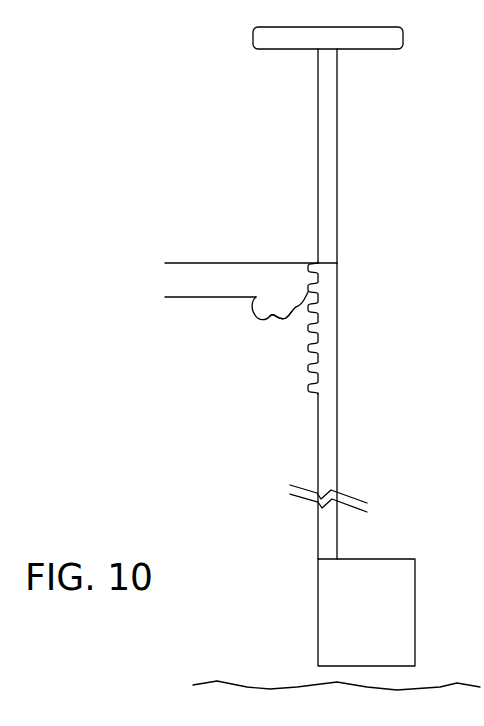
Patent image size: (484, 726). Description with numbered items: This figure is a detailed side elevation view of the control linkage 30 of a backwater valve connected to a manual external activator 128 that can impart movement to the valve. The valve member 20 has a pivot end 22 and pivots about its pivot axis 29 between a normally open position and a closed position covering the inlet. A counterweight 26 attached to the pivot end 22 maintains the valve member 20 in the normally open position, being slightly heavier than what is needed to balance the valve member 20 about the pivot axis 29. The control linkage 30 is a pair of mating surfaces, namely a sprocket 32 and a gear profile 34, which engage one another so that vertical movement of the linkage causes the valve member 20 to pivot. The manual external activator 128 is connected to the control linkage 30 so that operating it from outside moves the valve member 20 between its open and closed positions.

The manual external activator 128 is at (318, 50).
The pivot end 22 is at (299, 266).
The control linkage 30 is at (340, 350).
The counterweight 26 is at (317, 422).
The gear profile 34 is at (308, 361).
The valve member 20 is at (180, 299).
The sprocket 32 is at (283, 322).
The pivot axis 29 is at (292, 302).